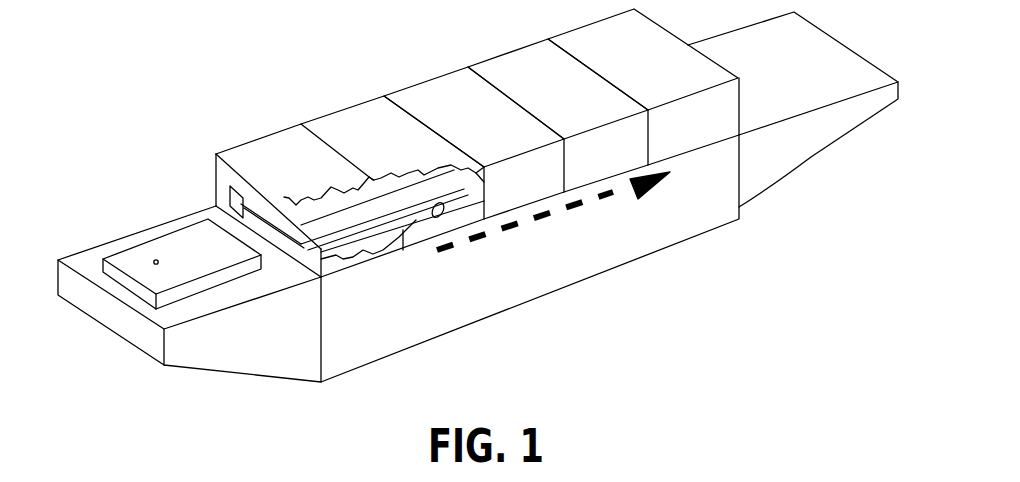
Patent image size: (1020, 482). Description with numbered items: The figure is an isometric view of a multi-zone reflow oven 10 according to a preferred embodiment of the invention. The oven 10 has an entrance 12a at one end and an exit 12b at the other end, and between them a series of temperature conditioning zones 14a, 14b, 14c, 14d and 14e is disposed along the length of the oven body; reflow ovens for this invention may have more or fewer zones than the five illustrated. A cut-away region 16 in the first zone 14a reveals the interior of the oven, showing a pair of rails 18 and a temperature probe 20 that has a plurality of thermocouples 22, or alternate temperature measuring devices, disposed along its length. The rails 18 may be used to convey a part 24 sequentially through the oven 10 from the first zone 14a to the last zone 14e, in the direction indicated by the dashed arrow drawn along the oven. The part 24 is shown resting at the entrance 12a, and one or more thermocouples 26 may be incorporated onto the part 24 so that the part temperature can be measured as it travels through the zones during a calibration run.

The multi-zone reflow oven 10 is at (313, 41).
The entrance 12a is at (211, 192).
The exit 12b is at (768, 97).
The zone 14a is at (343, 178).
The zone 14b is at (413, 155).
The zone 14c is at (492, 125).
The zone 14d is at (575, 103).
The zone 14e is at (662, 72).
The cut-away region 16 is at (480, 181).
The rails 18 is at (297, 250).
The temperature probe 20 is at (305, 255).
The thermocouples 22 is at (455, 200).
The part 24 is at (205, 252).
The thermocouples 26 is at (155, 260).